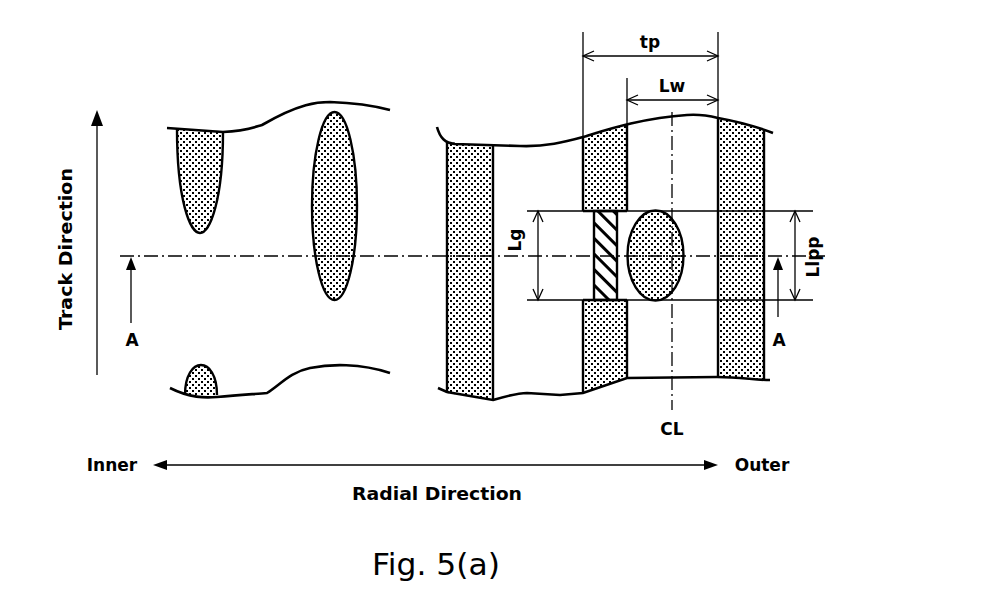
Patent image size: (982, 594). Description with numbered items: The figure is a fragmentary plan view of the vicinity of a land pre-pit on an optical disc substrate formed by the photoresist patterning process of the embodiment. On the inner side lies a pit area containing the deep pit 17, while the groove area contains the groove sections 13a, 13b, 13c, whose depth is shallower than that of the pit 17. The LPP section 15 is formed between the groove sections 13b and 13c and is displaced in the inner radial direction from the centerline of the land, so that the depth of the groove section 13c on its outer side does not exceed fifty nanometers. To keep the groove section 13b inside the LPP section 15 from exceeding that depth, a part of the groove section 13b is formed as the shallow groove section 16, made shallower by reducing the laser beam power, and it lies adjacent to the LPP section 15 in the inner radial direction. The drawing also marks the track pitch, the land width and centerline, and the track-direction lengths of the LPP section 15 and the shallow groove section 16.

The pit 17 is at (310, 167).
The groove section 13a is at (447, 165).
The groove section 13b is at (583, 167).
The groove section 13c is at (764, 157).
The land pre-pit (LPP) section 15 is at (638, 292).
The shallow groove section 16 is at (593, 267).